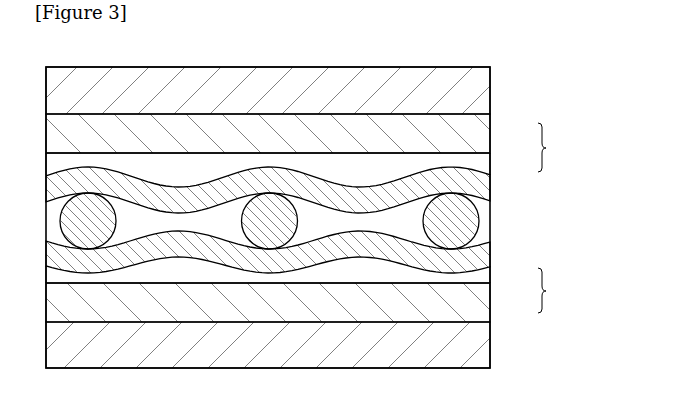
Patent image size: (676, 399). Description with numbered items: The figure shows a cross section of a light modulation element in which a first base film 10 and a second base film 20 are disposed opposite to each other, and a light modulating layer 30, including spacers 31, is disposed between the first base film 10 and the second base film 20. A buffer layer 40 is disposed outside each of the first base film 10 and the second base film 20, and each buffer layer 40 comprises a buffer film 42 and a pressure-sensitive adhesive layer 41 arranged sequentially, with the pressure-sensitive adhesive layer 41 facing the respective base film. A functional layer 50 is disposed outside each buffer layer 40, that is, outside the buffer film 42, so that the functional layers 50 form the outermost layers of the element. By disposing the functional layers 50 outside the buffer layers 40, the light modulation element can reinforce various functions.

The first base film 10 is at (488, 251).
The second base film 20 is at (491, 181).
The light modulating layer 30 is at (484, 206).
The spacer 31 is at (478, 228).
The buffer layer 40 is at (552, 218).
The pressure-sensitive adhesive layer 41 is at (491, 158).
The buffer film 42 is at (491, 129).
The functional layer 50 is at (491, 88).